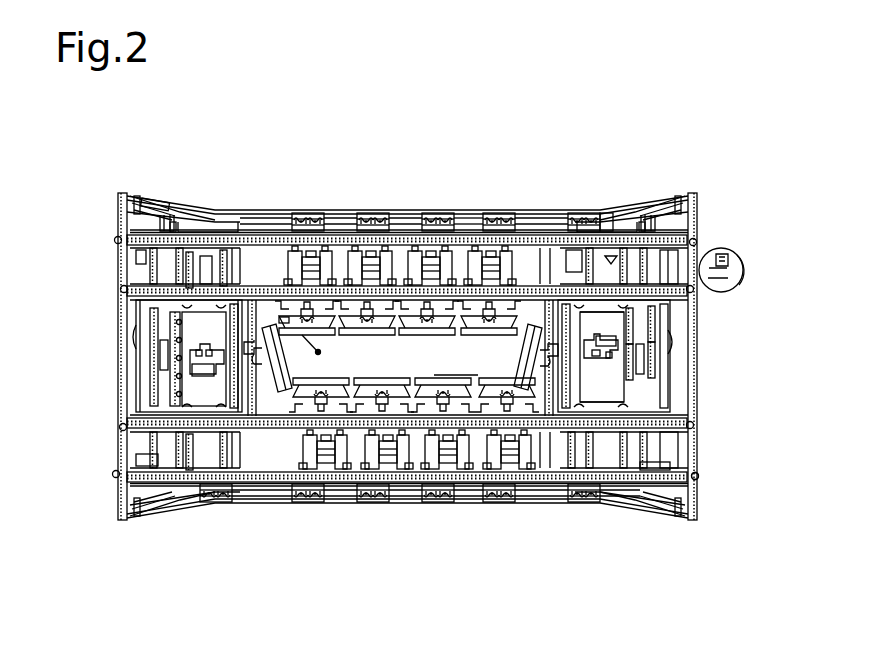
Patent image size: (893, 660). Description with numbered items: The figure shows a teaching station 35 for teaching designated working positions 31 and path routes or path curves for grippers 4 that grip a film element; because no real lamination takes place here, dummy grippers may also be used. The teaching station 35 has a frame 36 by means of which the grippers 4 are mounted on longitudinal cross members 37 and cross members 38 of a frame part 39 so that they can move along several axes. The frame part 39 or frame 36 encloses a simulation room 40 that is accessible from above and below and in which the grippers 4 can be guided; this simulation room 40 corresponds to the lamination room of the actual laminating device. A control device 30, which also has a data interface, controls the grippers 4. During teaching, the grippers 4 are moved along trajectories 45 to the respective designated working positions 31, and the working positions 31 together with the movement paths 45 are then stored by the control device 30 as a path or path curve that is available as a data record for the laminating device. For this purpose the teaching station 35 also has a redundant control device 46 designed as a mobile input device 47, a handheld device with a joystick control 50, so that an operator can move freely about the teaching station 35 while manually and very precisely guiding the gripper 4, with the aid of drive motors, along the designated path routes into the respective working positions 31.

The teaching station 35 is at (612, 164).
The frame 36 is at (161, 196).
The longitudinal cross members 37 is at (527, 234).
The trajectories 45 is at (302, 335).
The working positions 31 is at (318, 352).
The simulation room 40 is at (456, 357).
The gripper 4 is at (268, 398).
The cross members 38 is at (627, 388).
The frame part 39 is at (650, 468).
The control device 30 is at (360, 503).
The redundant control device 46 is at (724, 252).
The joystick control 50 is at (732, 253).
The mobile input device 47 is at (741, 295).